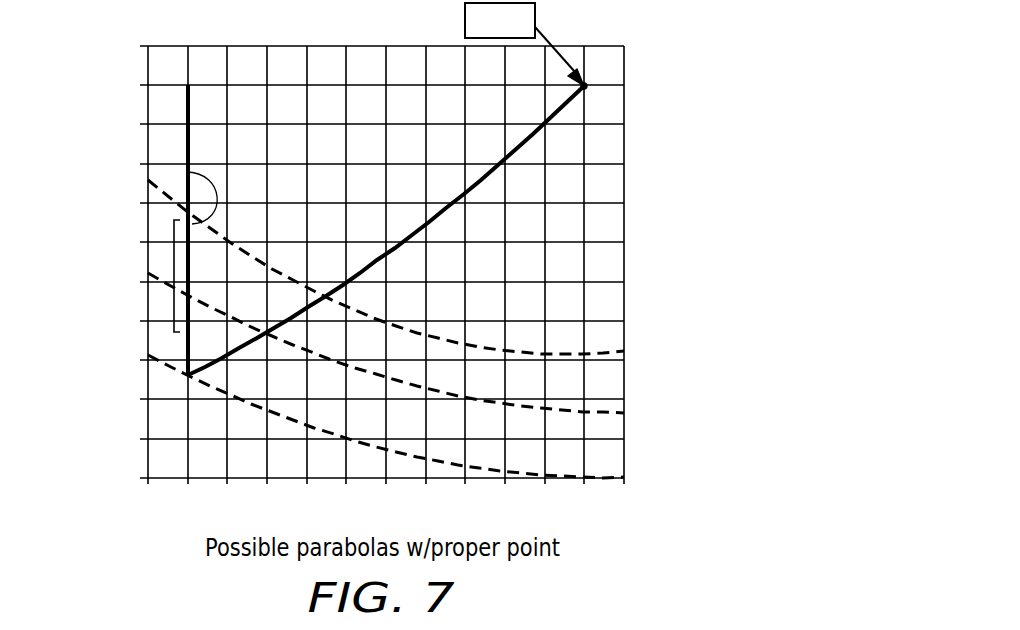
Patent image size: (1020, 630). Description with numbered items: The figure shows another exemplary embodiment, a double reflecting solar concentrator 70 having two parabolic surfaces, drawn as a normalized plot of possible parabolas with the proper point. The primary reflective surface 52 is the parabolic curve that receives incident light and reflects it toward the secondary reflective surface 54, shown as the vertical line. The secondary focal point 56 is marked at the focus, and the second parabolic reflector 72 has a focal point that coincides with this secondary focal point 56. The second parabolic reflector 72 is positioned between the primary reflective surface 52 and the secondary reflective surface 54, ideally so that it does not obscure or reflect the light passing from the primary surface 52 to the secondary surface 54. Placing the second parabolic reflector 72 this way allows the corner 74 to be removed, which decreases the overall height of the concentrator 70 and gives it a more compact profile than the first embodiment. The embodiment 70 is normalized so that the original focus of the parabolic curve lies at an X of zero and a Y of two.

The primary reflective surface 52 is at (488, 180).
The secondary reflective surface 54 is at (190, 108).
The secondary focal point 56 is at (587, 82).
The double reflecting solar concentrator 70 is at (672, 106).
The second parabolic reflector 72 is at (186, 172).
The corner 74 is at (172, 280).